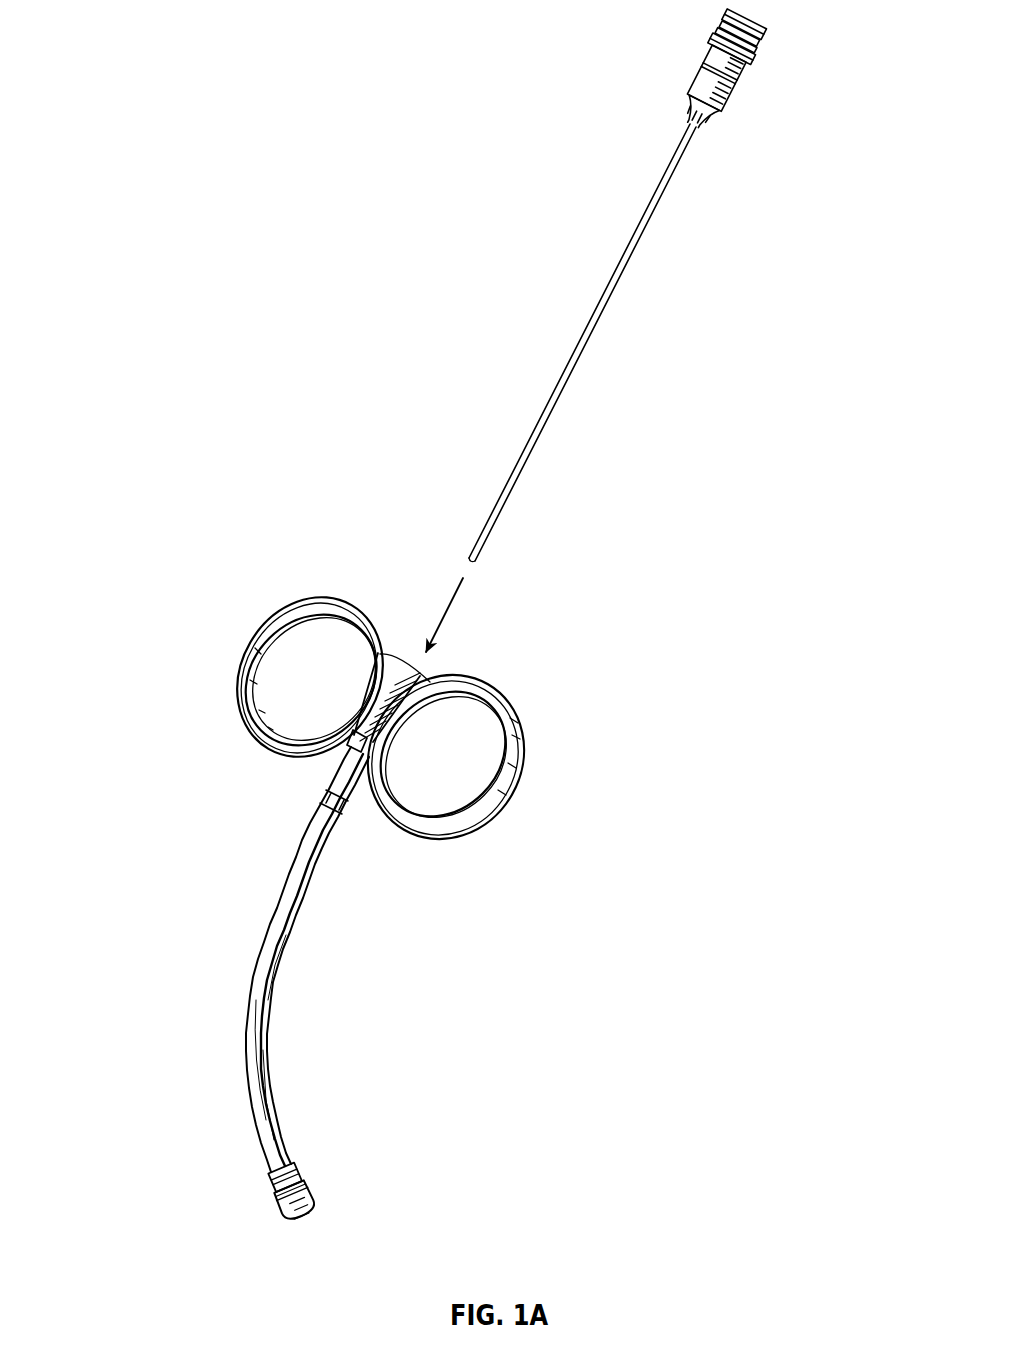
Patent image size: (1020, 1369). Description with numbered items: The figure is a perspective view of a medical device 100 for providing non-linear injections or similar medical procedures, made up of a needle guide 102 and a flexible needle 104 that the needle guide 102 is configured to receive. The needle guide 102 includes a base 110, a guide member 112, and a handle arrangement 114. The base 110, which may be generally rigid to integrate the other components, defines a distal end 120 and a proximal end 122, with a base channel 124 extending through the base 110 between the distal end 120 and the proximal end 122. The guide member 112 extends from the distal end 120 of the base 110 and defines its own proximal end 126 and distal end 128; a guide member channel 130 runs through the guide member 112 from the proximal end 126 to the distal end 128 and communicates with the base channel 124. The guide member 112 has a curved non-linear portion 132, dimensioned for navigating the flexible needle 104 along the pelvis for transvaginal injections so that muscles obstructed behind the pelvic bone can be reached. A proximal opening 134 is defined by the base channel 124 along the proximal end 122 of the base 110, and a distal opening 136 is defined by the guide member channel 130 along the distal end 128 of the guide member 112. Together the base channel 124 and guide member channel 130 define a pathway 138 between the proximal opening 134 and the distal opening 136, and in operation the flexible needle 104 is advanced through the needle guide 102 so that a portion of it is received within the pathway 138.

The medical device 100 is at (186, 38).
The needle guide 102 is at (208, 800).
The flexible needle 104 is at (608, 192).
The base 110 is at (400, 678).
The guide member 112 is at (278, 936).
The handle arrangement 114 is at (238, 672).
The distal end of the base 120 is at (331, 802).
The proximal end of the base 122 is at (393, 668).
The base channel 124 is at (434, 664).
The proximal end of the guide member 126 is at (350, 745).
The distal end of the guide member 128 is at (289, 1212).
The guide member channel 130 is at (318, 1224).
The non-linear portion 132 is at (285, 1063).
The proximal opening 134 is at (407, 655).
The distal opening 136 is at (287, 1238).
The pathway 138 is at (228, 920).